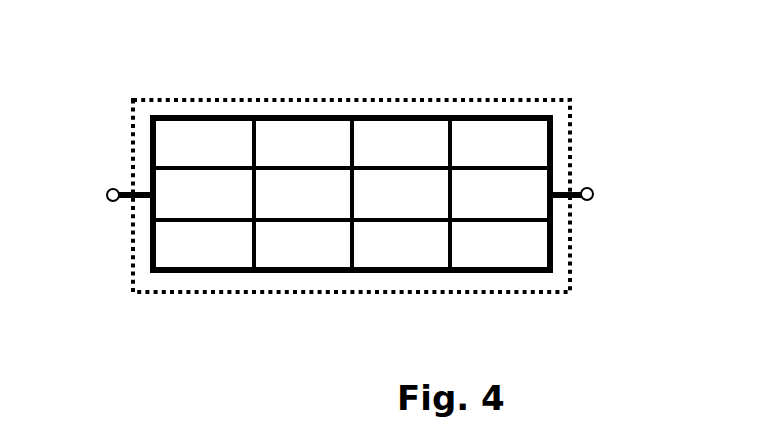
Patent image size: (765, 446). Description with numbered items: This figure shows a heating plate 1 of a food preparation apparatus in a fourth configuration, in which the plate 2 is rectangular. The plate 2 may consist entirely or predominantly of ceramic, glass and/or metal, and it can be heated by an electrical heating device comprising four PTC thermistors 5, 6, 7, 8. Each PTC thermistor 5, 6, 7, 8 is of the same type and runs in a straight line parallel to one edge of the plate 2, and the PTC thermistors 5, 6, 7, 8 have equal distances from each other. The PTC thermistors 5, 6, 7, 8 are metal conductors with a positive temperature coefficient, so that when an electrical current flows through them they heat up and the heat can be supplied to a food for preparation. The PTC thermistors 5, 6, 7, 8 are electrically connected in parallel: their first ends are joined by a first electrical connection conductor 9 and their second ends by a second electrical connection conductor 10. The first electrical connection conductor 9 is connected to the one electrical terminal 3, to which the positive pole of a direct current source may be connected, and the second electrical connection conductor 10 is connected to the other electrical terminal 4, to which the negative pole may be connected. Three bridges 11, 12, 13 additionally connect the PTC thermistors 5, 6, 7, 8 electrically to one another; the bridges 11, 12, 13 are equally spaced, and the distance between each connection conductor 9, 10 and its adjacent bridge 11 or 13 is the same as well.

The heating plate 1 is at (345, 192).
The plate 2 is at (266, 100).
The electrical terminal 3 is at (106, 199).
The electrical terminal 4 is at (594, 200).
The PTC thermistor 5 is at (432, 116).
The PTC thermistor 6 is at (496, 168).
The PTC thermistor 7 is at (215, 221).
The PTC thermistor 8 is at (302, 272).
The first electrical connection conductor 9 is at (152, 136).
The second electrical connection conductor 10 is at (551, 142).
The bridge 11 is at (252, 256).
The bridge 12 is at (354, 192).
The bridge 13 is at (452, 205).